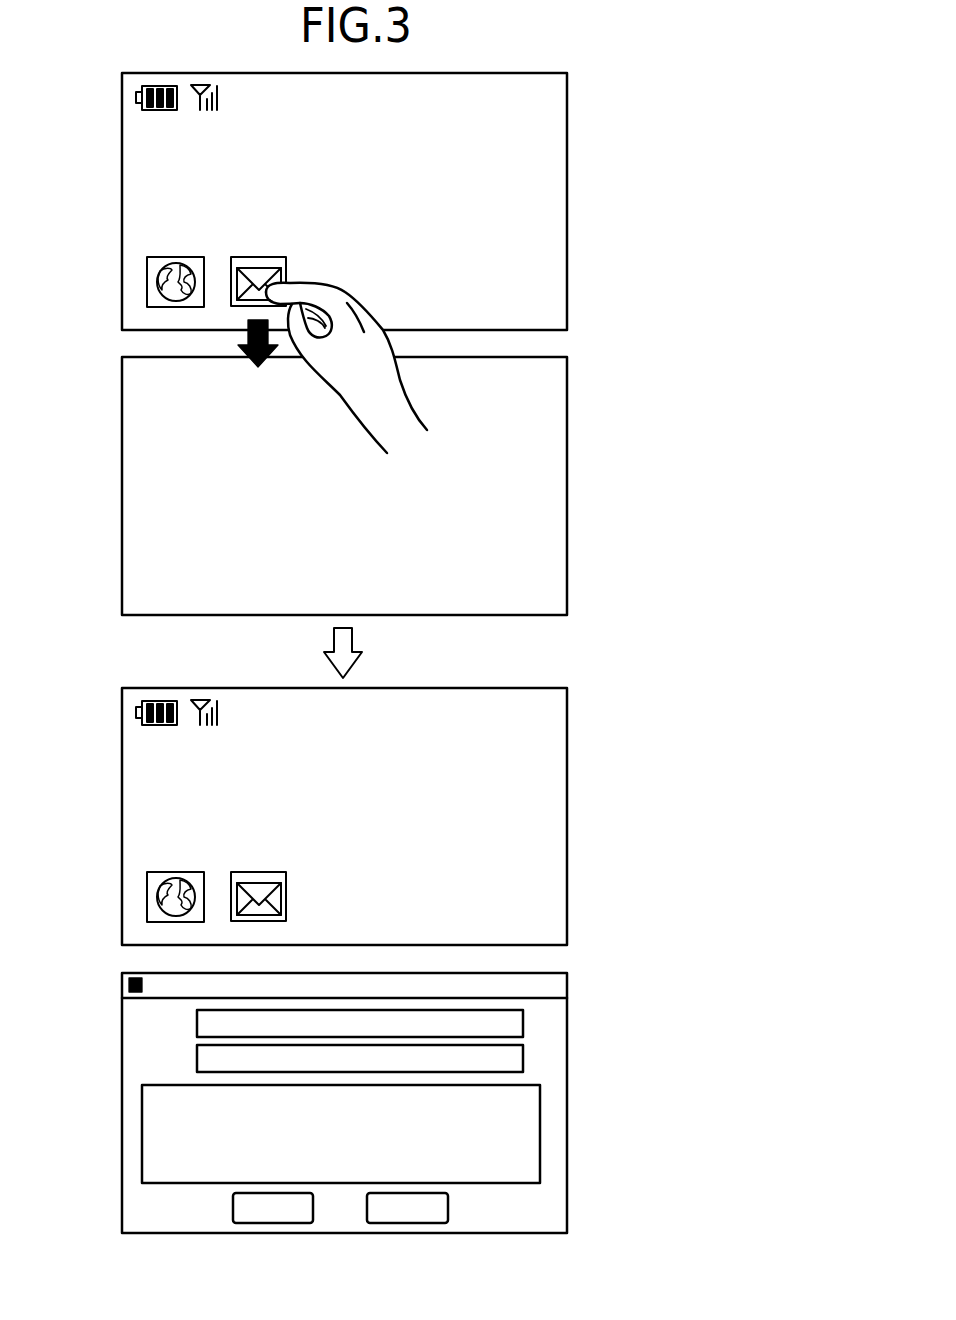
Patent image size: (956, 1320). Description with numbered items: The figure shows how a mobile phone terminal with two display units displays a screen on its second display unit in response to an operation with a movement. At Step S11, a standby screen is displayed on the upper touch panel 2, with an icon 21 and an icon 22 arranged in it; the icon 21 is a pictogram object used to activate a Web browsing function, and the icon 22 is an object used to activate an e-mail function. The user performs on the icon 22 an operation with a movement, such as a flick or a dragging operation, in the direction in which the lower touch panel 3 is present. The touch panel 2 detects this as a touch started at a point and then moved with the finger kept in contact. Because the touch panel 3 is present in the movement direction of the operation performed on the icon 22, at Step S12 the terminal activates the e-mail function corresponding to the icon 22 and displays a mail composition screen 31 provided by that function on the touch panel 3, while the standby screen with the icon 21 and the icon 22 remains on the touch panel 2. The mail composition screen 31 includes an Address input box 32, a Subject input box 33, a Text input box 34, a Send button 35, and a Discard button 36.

The touch panel 2 is at (122, 153).
The touch panel 3 is at (122, 485).
The icon 21 is at (147, 283).
The icon 22 is at (250, 257).
The mail composition screen 31 is at (343, 1099).
The Address input box 32 is at (523, 1022).
The Subject input box 33 is at (523, 1057).
The Text input box 34 is at (540, 1130).
The Send button 35 is at (233, 1208).
The Discard button 36 is at (448, 1207).
The Step S11 is at (630, 119).
The Step S12 is at (633, 740).